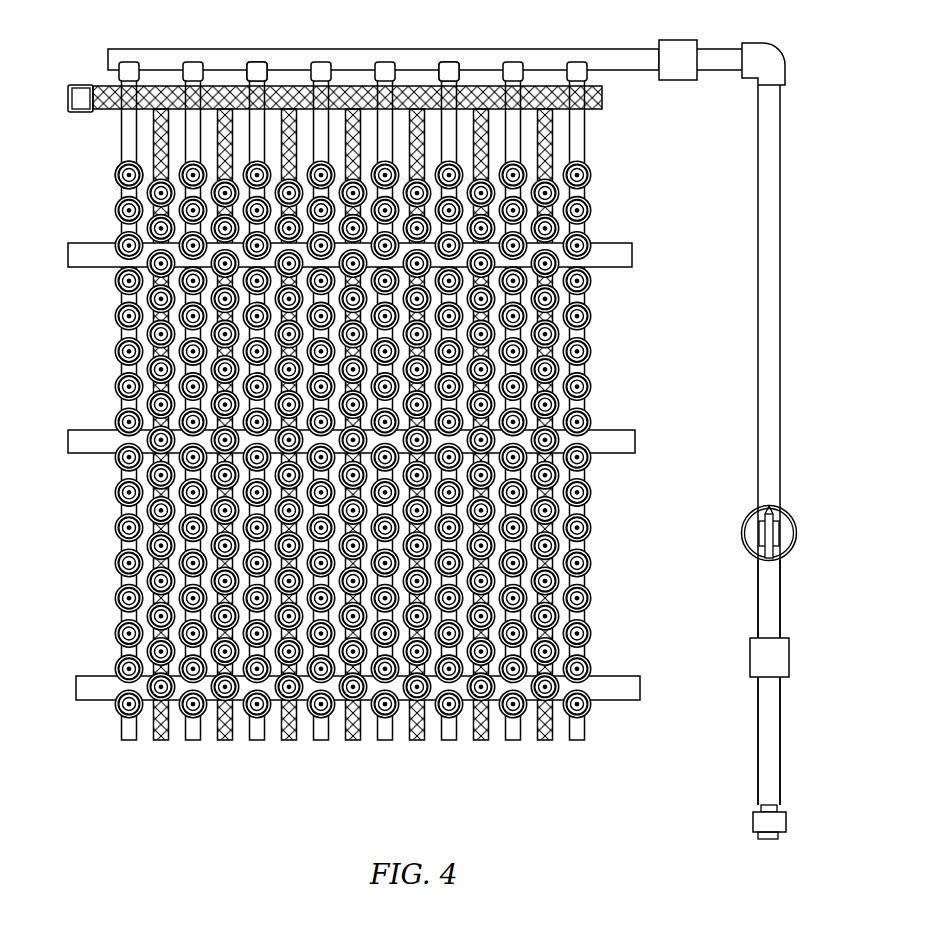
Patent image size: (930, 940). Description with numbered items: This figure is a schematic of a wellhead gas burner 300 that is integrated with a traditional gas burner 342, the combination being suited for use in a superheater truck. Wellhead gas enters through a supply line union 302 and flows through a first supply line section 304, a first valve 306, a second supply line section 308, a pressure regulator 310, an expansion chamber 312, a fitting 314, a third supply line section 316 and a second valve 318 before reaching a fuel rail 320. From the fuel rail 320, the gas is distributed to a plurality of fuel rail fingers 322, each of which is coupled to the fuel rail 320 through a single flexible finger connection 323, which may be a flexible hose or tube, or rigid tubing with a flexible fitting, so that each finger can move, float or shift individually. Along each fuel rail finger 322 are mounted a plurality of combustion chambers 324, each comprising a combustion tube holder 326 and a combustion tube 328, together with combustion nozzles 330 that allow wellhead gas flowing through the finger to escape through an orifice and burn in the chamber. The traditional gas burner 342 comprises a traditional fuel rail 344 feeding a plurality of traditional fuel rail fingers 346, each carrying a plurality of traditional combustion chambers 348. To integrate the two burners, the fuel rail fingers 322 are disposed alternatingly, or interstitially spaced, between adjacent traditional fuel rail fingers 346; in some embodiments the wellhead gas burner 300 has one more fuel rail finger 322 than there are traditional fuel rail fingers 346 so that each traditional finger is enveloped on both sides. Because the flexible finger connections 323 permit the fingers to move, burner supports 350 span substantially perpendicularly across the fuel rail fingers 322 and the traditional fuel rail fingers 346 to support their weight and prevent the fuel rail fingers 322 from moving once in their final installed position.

The wellhead gas burner 300 is at (412, 420).
The supply line union 302 is at (753, 818).
The first supply line section 304 is at (757, 741).
The first valve 306 is at (750, 655).
The second supply line section 308 is at (757, 597).
The pressure regulator 310 is at (750, 513).
The expansion chamber 312 is at (757, 293).
The fitting 314 is at (752, 80).
The third supply line section 316 is at (720, 49).
The second valve 318 is at (681, 40).
The fuel rail 320 is at (386, 48).
The fuel rail finger 322 is at (121, 116).
The flexible finger connection 323 is at (262, 61).
The combustion chamber 324 is at (118, 163).
The combustion tube holder 326 is at (114, 165).
The combustion tube 328 is at (118, 187).
The combustion nozzle 330 is at (127, 176).
The traditional gas burner 342 is at (105, 86).
The traditional fuel rail 344 is at (604, 97).
The traditional fuel rail finger 346 is at (588, 130).
The traditional combustion chamber 348 is at (591, 186).
The burner support 350 is at (633, 252).